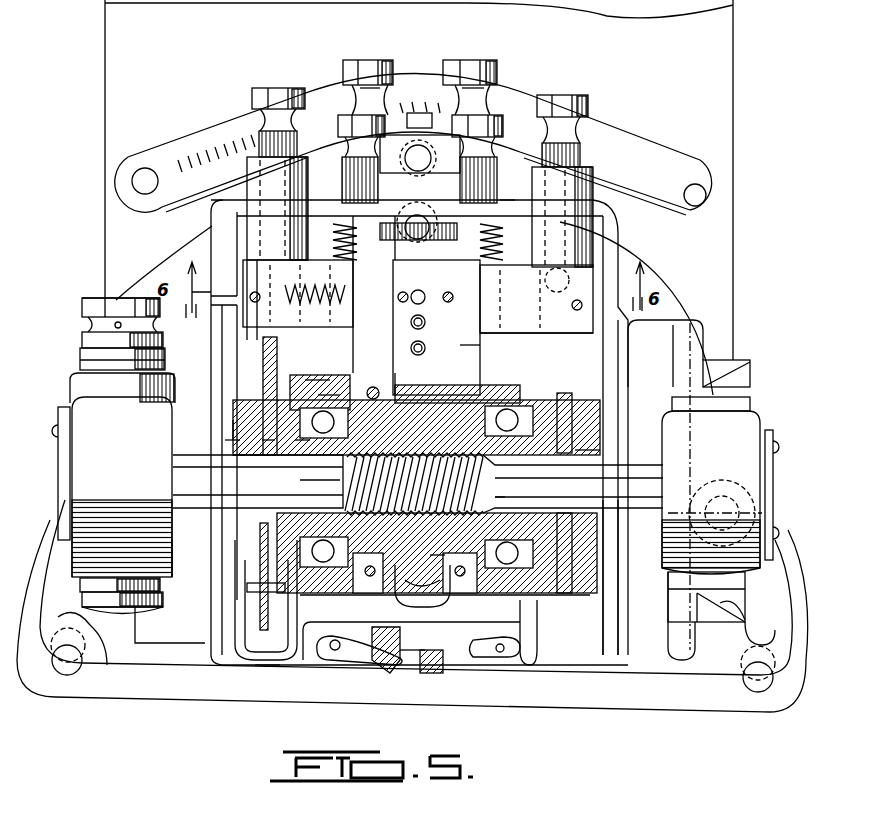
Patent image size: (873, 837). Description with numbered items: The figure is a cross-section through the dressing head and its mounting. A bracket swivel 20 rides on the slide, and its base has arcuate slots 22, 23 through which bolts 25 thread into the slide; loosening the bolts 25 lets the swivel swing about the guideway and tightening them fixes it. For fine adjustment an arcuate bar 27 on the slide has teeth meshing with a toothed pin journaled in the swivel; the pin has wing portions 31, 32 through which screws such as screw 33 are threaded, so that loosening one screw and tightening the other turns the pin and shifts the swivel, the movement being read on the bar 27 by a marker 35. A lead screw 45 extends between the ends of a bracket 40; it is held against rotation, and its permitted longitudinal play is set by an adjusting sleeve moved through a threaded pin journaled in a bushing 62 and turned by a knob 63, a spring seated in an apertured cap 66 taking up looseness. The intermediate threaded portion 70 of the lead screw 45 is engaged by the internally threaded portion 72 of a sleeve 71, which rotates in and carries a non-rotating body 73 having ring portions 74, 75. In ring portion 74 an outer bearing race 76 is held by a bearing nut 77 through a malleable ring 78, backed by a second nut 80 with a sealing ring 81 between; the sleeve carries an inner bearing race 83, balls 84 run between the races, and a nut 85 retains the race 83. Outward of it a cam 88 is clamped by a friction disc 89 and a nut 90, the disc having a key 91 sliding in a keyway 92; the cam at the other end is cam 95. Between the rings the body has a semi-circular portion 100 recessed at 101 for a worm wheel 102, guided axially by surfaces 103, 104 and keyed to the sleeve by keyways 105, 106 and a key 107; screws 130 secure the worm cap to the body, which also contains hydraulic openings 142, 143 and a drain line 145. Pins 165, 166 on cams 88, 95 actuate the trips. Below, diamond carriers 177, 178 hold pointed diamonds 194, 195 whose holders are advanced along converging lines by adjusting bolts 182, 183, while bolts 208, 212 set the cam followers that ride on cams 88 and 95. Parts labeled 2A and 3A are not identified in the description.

The bracket swivel 20 is at (713, 680).
The arcuate slot 22 is at (747, 637).
The arcuate slot 23 is at (82, 662).
The bolts 25 is at (418, 168).
The arcuate bar 27 is at (686, 160).
The section line 2A is at (507, 187).
The wing portion 31 is at (366, 88).
The wing portion 32 is at (440, 110).
The screw 33 is at (360, 62).
The marker 35 is at (418, 113).
The bolt stem 3A is at (478, 70).
The bracket 40 is at (64, 388).
The lead screw 45 is at (175, 560).
The bushing 62 is at (95, 362).
The knob 63 is at (90, 300).
The apertured cap 66 is at (148, 612).
The intermediate threaded portion 70 is at (483, 492).
The sleeve 71 is at (600, 452).
The internally threaded portion 72 is at (505, 498).
The body 73 is at (267, 667).
The ring portion 74 is at (263, 380).
The ring portion 75 is at (600, 390).
The outer bearing race 76 is at (330, 393).
The bearing nut 77 is at (306, 340).
The malleable ring 78 is at (318, 380).
The second nut 80 is at (263, 397).
The sealing ring 81 is at (258, 413).
The inner bearing race 83 is at (303, 440).
The balls 84 is at (330, 489).
The nut 85 is at (268, 440).
The cam 88 is at (265, 348).
The friction disc 89 is at (228, 445).
The nut 90 is at (233, 428).
The key 91 is at (258, 462).
The keyway 92 is at (235, 462).
The cam 95 is at (580, 603).
The semi-circular portion 100 is at (440, 640).
The recess 101 is at (397, 650).
The worm wheel 102 is at (523, 652).
The guide surface 103 is at (395, 598).
The guide surface 104 is at (470, 600).
The keyway 105 is at (458, 378).
The keyway 106 is at (468, 348).
The key 107 is at (536, 326).
The screws 130 is at (530, 297).
The opening 142 is at (425, 322).
The opening 143 is at (425, 348).
The drain line 145 is at (425, 296).
The pin 165 is at (266, 591).
The pin 166 is at (560, 378).
The diamond carrier 177 is at (430, 560).
The diamond carrier 178 is at (317, 655).
The adjusting bolt 182 is at (338, 118).
The adjusting bolt 183 is at (500, 112).
The pointed diamond 194 is at (342, 656).
The pointed diamond 195 is at (413, 665).
The bolt 208 is at (255, 92).
The second bolt 212 is at (585, 100).